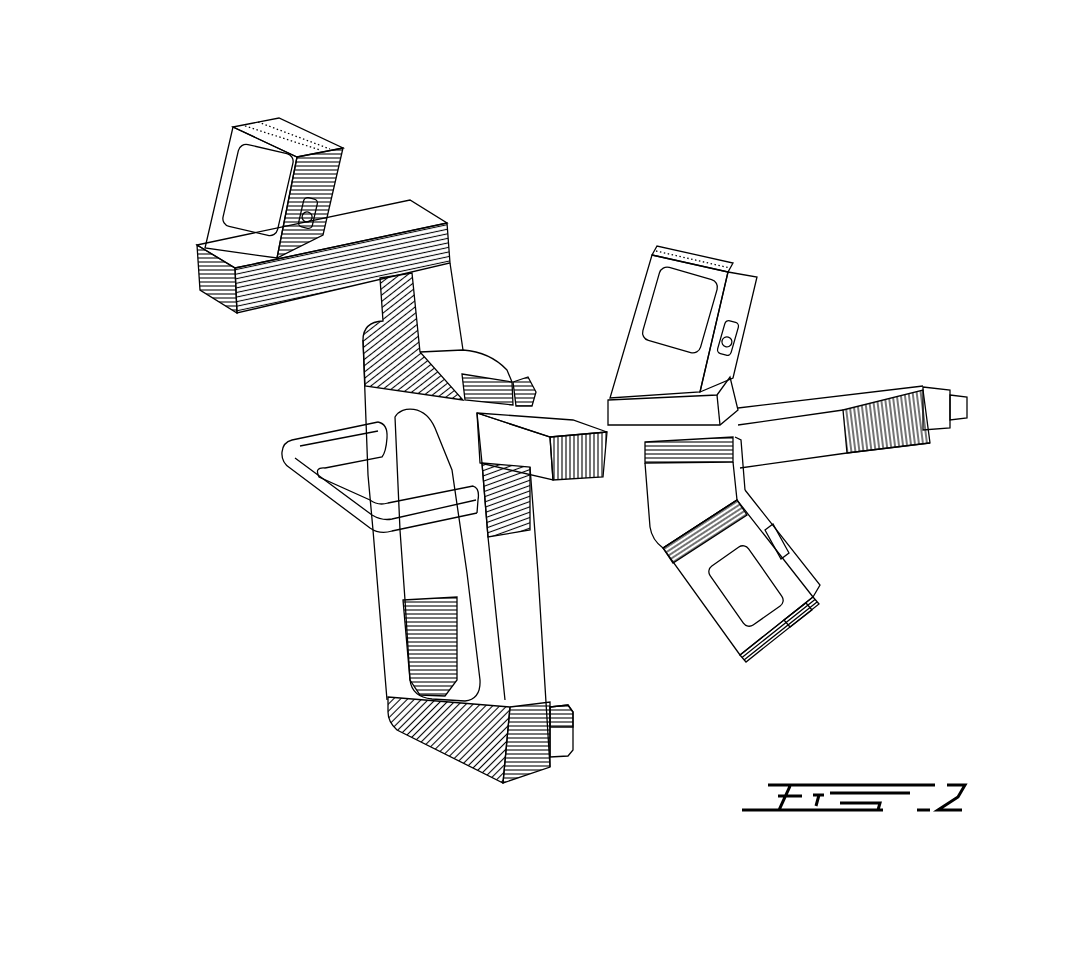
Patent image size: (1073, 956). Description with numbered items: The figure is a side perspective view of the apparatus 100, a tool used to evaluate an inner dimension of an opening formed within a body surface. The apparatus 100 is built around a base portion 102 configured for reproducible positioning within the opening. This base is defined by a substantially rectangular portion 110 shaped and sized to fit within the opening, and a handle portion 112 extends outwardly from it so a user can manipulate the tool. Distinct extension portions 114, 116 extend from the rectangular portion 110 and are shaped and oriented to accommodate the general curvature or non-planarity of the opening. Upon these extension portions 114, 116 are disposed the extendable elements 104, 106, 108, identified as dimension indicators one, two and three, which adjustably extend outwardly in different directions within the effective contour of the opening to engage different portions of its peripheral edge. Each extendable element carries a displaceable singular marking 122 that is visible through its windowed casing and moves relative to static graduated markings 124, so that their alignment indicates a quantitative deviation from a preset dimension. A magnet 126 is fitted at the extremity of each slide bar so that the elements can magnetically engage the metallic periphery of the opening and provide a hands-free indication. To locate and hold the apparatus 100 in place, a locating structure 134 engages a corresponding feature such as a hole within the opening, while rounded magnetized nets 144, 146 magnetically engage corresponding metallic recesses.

The apparatus 100 is at (578, 150).
The base portion 102 is at (530, 637).
The extendable element 104 is at (340, 170).
The extendable element 106 is at (630, 348).
The extendable element 108 is at (807, 580).
The rectangular portion 110 is at (440, 745).
The handle portion 112 is at (327, 485).
The extension portion 114 is at (453, 247).
The extension portion 116 is at (857, 417).
The singular marking 122 is at (735, 637).
The graduated markings 124 is at (787, 557).
The magnet 126 is at (295, 122).
The locating structure 134 is at (968, 407).
The rounded magnetized net 144 is at (573, 730).
The rounded magnetized net 146 is at (525, 382).